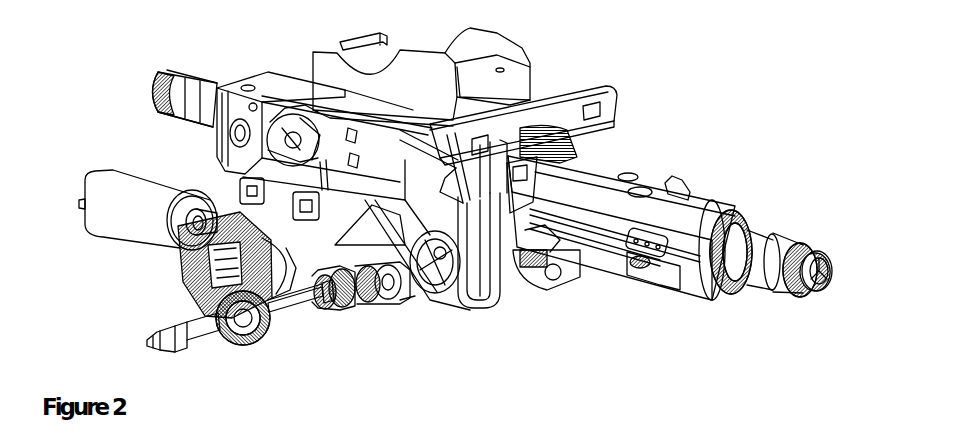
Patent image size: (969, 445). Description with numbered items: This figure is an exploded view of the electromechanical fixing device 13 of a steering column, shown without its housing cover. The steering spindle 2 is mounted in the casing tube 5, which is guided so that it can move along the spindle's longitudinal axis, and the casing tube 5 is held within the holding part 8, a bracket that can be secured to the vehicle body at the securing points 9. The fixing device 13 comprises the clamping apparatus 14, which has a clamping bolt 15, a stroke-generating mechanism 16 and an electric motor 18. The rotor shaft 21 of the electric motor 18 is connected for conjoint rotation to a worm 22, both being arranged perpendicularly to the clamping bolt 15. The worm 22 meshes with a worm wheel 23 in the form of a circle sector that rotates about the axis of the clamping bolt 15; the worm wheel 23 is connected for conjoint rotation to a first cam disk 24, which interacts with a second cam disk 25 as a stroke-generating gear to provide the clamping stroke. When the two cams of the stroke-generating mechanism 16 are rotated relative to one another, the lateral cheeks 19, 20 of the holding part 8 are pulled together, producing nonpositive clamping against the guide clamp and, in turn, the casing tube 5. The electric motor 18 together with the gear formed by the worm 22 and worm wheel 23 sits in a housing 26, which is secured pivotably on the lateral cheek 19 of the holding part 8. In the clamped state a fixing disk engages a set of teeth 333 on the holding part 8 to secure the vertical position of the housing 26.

The steering spindle 2 is at (773, 240).
The casing tube 5 is at (597, 173).
The holding part 8 is at (558, 113).
The securing points 9 is at (251, 83).
The fixing device 13 is at (287, 362).
The clamping apparatus 14 is at (319, 362).
The clamping bolt 15 is at (203, 333).
The stroke-generating mechanism 16 is at (391, 327).
The electric motor 18 is at (124, 200).
The lateral cheek 19 is at (482, 304).
The lateral cheek 20 is at (551, 278).
The rotor shaft 21 is at (204, 230).
The worm 22 is at (238, 222).
The worm wheel 23 is at (192, 281).
The first cam disk 24 is at (352, 302).
The second cam disk 25 is at (398, 298).
The housing 26 is at (503, 280).
The set of teeth 333 is at (470, 313).